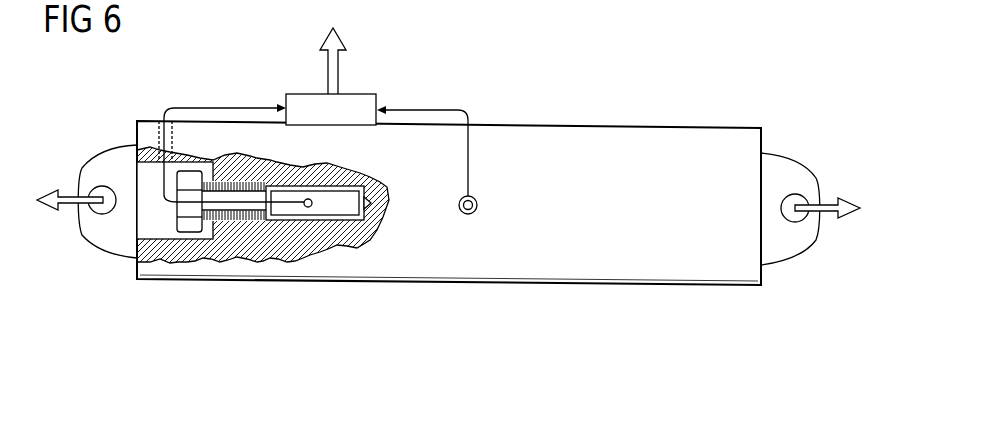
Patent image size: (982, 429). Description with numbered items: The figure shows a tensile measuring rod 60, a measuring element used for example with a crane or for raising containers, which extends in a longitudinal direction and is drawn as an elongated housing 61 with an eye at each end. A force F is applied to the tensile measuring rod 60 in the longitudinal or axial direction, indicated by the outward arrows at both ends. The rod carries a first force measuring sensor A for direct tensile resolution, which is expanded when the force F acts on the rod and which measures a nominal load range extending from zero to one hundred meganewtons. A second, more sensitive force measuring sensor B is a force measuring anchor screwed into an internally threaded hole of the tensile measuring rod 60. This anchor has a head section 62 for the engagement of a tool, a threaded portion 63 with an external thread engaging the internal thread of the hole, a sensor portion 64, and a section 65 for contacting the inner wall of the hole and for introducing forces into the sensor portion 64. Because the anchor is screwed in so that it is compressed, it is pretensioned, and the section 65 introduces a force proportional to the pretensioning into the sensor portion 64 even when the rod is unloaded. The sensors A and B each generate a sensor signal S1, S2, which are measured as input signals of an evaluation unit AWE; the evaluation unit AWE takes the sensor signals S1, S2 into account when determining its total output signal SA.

The tensile measuring rod 60 is at (571, 36).
The housing 61 is at (667, 141).
The head section 62 is at (191, 226).
The threaded portion 63 is at (223, 225).
The sensor portion 64 is at (317, 208).
The contact section 65 is at (363, 216).
The first force measuring sensor A is at (468, 215).
The second force measuring sensor B is at (308, 212).
The force F is at (64, 194).
The sensor signal S1 is at (223, 107).
The sensor signal S2 is at (428, 110).
The total output signal SA is at (332, 68).
The evaluation unit AWE is at (364, 95).